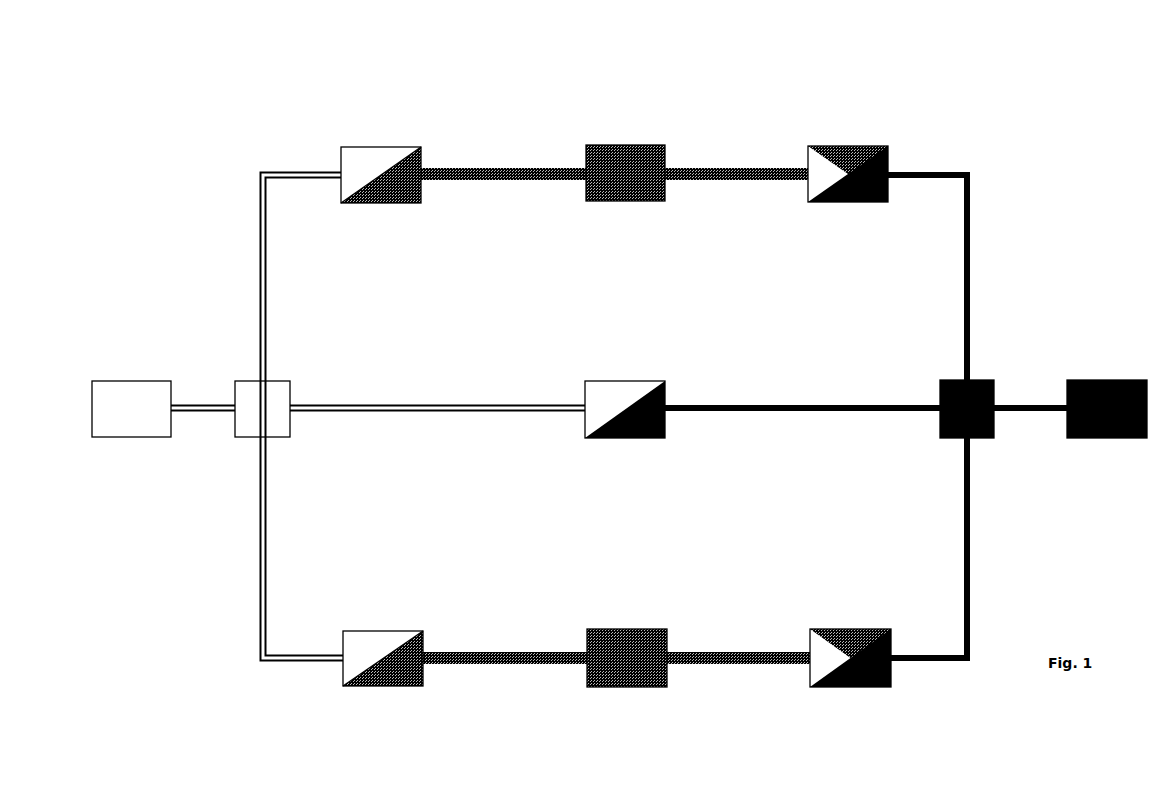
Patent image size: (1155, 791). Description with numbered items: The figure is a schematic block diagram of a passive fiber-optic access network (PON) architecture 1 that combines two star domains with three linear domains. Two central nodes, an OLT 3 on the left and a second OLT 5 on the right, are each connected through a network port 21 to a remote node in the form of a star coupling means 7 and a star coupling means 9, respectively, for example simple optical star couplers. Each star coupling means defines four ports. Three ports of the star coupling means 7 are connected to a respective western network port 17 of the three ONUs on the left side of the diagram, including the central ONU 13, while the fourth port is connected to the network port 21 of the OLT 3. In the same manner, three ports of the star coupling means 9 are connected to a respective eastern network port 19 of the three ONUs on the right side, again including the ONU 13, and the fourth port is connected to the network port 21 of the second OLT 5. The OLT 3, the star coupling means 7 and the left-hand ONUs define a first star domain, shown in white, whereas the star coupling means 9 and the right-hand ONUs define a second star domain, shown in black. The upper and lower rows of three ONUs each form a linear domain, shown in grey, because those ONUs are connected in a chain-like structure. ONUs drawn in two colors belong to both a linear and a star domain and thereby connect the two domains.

The passive fiber-optic access network (PON) architecture 1 is at (915, 116).
The OLT 3 is at (141, 381).
The second OLT 5 is at (1105, 380).
The star coupling means 7 is at (245, 415).
The star coupling means 9 is at (982, 380).
The ONU 13 is at (623, 387).
The western network port 17 is at (341, 171).
The eastern network port 19 is at (428, 178).
The network port 21 is at (172, 407).